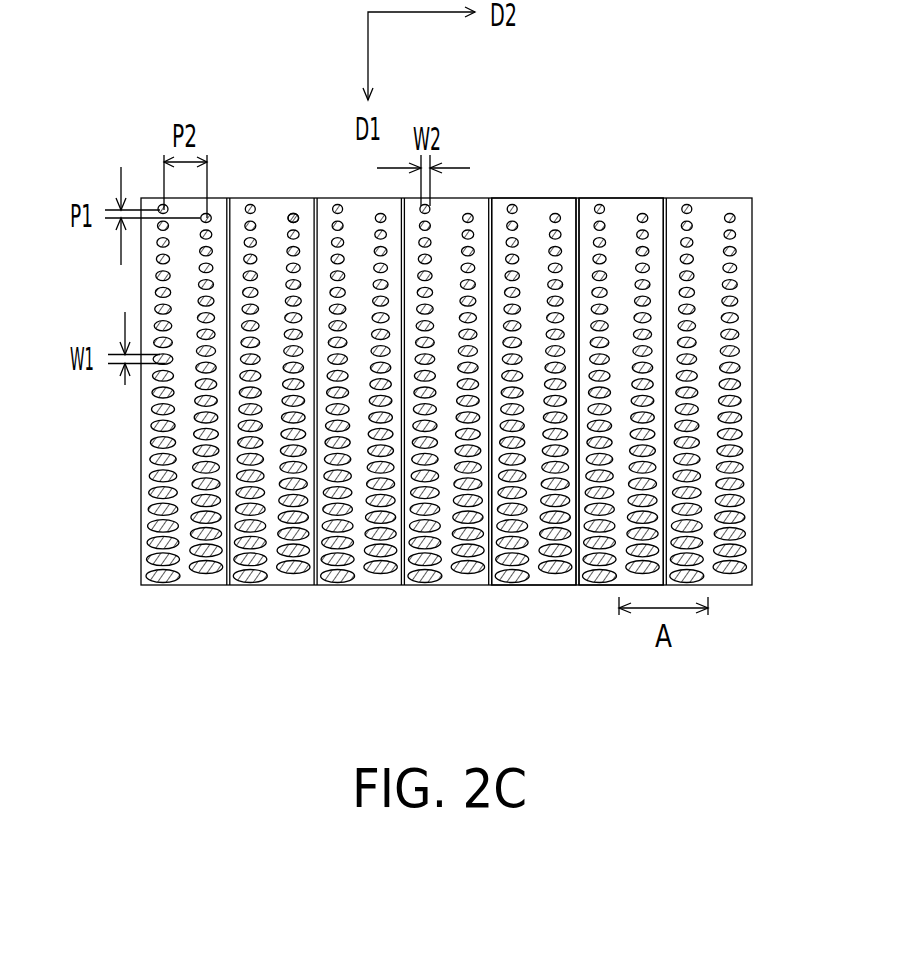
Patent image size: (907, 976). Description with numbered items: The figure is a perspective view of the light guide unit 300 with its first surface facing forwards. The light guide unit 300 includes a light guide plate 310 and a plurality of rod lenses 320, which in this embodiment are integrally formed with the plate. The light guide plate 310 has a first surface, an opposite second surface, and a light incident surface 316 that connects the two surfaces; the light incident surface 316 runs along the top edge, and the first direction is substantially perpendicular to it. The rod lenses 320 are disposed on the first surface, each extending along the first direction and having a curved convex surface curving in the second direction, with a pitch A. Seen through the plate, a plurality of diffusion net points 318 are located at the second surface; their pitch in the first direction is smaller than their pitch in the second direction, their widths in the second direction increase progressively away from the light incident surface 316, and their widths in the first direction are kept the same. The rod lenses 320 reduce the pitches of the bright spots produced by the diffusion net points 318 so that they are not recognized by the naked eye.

The light guide unit 300 is at (517, 380).
The light guide plate 310 is at (517, 380).
The light incident surface 316 is at (624, 198).
The diffusion net points 318 is at (295, 212).
The rod lenses 320 is at (578, 593).